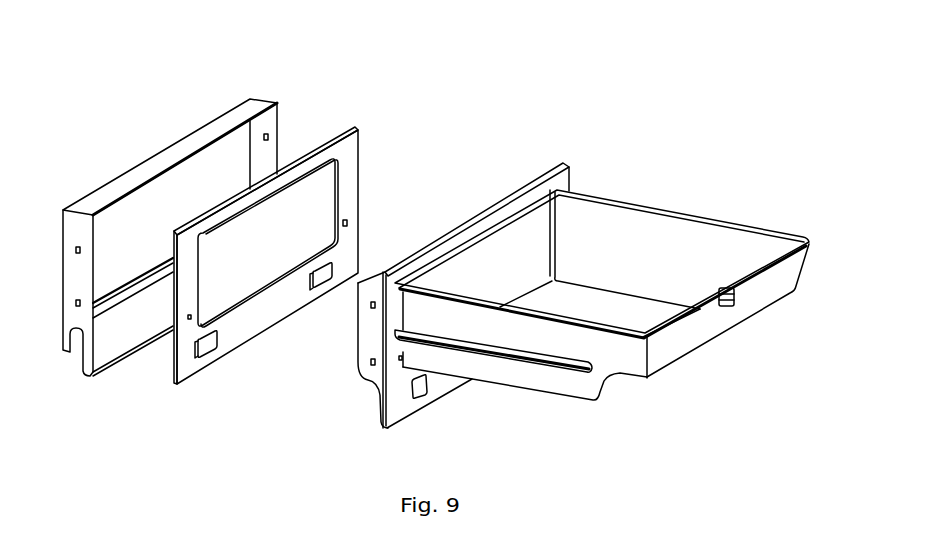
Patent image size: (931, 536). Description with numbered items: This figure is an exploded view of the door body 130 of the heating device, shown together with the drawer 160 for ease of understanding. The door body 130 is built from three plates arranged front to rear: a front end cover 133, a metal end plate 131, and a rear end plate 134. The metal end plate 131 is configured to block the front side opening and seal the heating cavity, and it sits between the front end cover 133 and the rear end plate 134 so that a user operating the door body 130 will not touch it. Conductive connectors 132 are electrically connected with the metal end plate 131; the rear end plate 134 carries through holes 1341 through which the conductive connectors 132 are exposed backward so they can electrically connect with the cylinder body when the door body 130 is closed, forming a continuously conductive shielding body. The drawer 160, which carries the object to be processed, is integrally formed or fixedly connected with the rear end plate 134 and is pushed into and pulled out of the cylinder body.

The door body 130 is at (533, 140).
The metal end plate 131 is at (345, 148).
The conductive connectors 132 is at (323, 289).
The front end cover 133 is at (197, 138).
The rear end plate 134 is at (495, 220).
The through holes 1341 is at (421, 399).
The drawer 160 is at (662, 222).